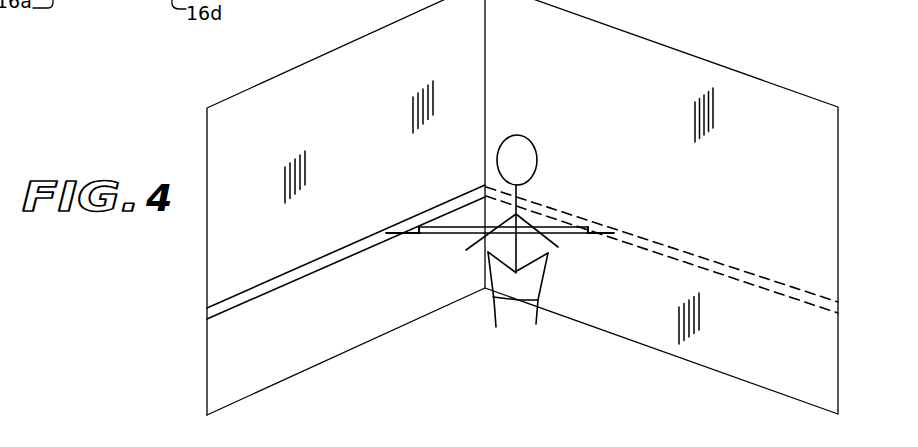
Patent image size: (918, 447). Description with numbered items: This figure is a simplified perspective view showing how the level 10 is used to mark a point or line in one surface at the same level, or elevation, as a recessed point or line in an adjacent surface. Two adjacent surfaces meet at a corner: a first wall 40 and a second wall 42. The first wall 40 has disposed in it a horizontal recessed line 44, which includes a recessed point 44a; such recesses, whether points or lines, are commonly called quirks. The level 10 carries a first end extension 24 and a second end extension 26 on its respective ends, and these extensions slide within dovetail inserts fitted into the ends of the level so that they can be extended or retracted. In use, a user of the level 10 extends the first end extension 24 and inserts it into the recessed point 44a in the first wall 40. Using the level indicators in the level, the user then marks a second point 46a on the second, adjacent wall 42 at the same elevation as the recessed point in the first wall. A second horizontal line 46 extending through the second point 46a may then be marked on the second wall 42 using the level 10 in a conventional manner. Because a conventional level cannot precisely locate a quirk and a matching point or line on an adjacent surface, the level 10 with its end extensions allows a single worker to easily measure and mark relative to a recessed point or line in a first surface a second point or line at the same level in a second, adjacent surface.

The level 10 is at (443, 236).
The first end extension 24 is at (415, 237).
The second end extension 26 is at (596, 236).
The first wall 40 is at (362, 122).
The second wall 42 is at (619, 119).
The horizontal recessed line 44 is at (251, 297).
The recessed point 44a is at (386, 233).
The second horizontal line 46 is at (712, 267).
The second point 46a is at (614, 231).